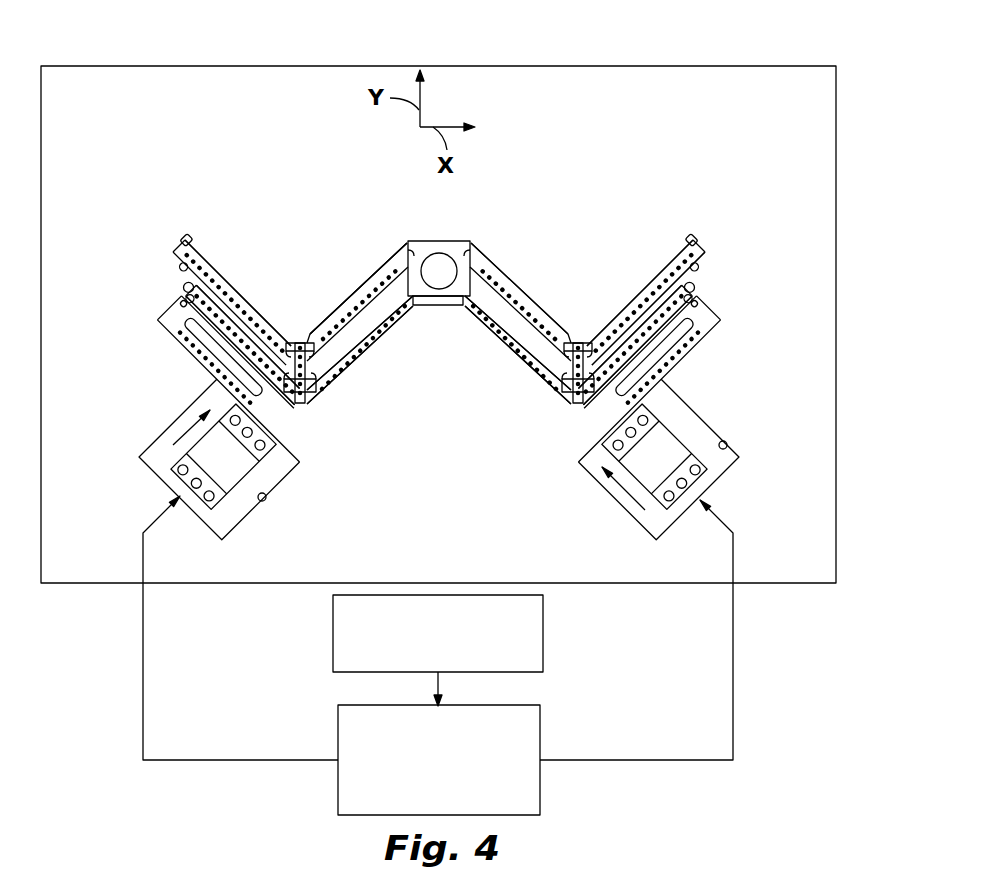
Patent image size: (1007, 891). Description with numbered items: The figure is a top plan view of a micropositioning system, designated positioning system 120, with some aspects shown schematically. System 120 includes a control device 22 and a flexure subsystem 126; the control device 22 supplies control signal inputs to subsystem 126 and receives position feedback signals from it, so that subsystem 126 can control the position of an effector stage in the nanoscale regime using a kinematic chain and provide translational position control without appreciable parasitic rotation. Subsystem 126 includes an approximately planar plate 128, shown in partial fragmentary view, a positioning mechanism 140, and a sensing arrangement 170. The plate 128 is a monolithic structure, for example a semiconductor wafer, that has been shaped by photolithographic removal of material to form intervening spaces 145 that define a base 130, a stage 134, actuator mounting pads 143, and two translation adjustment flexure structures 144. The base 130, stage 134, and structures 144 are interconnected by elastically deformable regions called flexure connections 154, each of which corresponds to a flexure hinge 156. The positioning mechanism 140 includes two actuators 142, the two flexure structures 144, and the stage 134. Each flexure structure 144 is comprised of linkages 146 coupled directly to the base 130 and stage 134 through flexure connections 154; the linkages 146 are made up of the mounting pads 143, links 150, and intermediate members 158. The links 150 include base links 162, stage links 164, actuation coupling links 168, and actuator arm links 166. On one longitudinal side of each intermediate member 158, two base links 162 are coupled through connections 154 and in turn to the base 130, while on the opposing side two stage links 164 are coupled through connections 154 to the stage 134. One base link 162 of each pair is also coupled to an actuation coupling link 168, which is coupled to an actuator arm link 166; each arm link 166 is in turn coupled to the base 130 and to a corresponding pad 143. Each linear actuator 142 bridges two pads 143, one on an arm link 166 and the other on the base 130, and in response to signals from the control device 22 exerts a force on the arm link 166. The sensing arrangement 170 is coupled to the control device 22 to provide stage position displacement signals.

The positioning system 120 is at (816, 40).
The flexure subsystem 126 is at (664, 185).
The plate 128 is at (97, 474).
The base 130 is at (460, 364).
The stage 134 is at (434, 254).
The positioning mechanism 140 is at (402, 195).
The actuator 142 is at (235, 470).
The actuator mounting pad 143 is at (275, 448).
The translation adjustment flexure structure 144 is at (318, 215).
The intervening space 145 is at (184, 289).
The linkage 146 is at (302, 240).
The link 150 is at (333, 396).
The flexure connection 154 is at (187, 234).
The flexure hinge 156 is at (181, 262).
The intermediate member 158 is at (577, 343).
The base link 162 is at (226, 318).
The stage link 164 is at (338, 335).
The actuator arm link 166 is at (190, 358).
The actuation coupling link 168 is at (184, 304).
The sensing arrangement 170 is at (543, 662).
The control device 22 is at (451, 799).